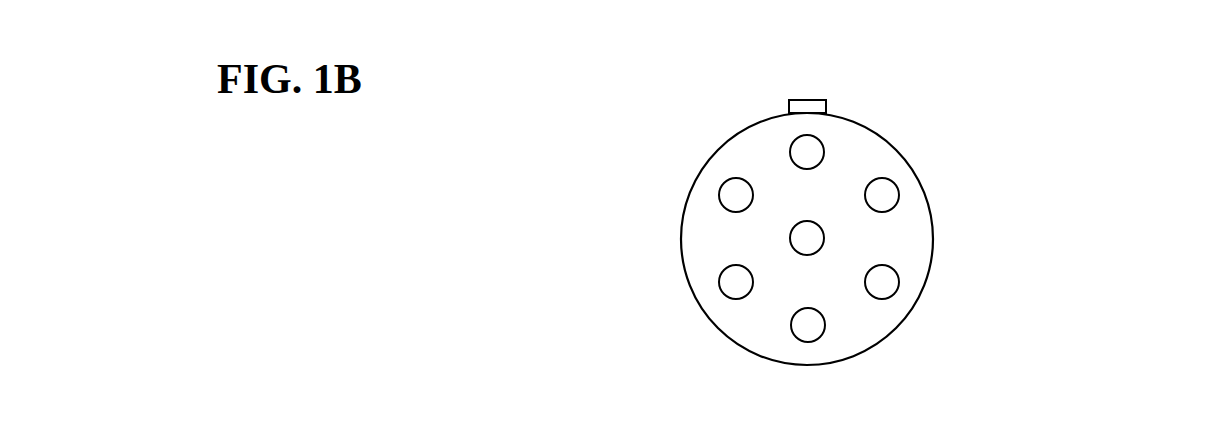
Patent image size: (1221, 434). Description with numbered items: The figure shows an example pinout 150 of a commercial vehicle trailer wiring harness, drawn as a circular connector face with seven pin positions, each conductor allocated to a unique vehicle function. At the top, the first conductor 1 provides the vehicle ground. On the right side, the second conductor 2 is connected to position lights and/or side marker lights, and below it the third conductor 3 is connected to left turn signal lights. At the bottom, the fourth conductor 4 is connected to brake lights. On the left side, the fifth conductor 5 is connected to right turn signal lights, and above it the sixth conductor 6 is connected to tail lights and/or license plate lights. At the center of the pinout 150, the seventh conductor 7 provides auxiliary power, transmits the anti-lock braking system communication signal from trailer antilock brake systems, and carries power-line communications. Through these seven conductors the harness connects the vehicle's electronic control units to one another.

The pinout 150 is at (824, 292).
The first conductor 1 is at (878, 78).
The second conductor 2 is at (972, 172).
The third conductor 3 is at (968, 255).
The fourth conductor 4 is at (970, 326).
The fifth conductor 5 is at (657, 300).
The sixth conductor 6 is at (657, 195).
The seventh conductor 7 is at (727, 115).